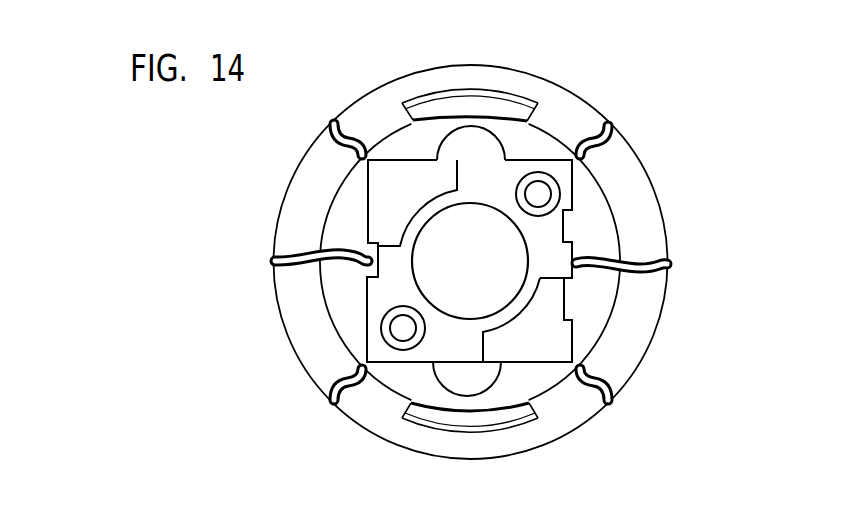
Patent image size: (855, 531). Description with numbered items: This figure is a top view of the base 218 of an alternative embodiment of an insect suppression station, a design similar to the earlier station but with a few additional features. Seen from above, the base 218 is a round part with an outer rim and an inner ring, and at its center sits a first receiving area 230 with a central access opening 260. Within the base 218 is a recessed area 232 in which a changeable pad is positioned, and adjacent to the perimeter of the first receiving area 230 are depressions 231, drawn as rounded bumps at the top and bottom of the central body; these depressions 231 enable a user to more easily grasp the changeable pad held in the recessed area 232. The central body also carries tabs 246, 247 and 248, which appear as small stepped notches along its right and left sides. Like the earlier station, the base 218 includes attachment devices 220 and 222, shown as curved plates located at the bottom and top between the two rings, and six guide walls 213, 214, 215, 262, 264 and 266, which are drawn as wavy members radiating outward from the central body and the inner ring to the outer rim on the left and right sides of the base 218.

The base 218 is at (626, 82).
The first receiving area 230 is at (373, 205).
The recessed area 232 is at (375, 218).
The tab 248 is at (371, 278).
The tab 246 is at (566, 220).
The tab 247 is at (576, 306).
The access opening 260 is at (469, 207).
The depressions 231 is at (492, 135).
The attachment device 222 is at (470, 90).
The attachment device 220 is at (510, 431).
The guide wall 214 is at (273, 257).
The guide wall 264 is at (665, 260).
The guide wall 215 is at (333, 120).
The guide wall 266 is at (609, 126).
The guide wall 213 is at (333, 398).
The guide wall 262 is at (612, 398).